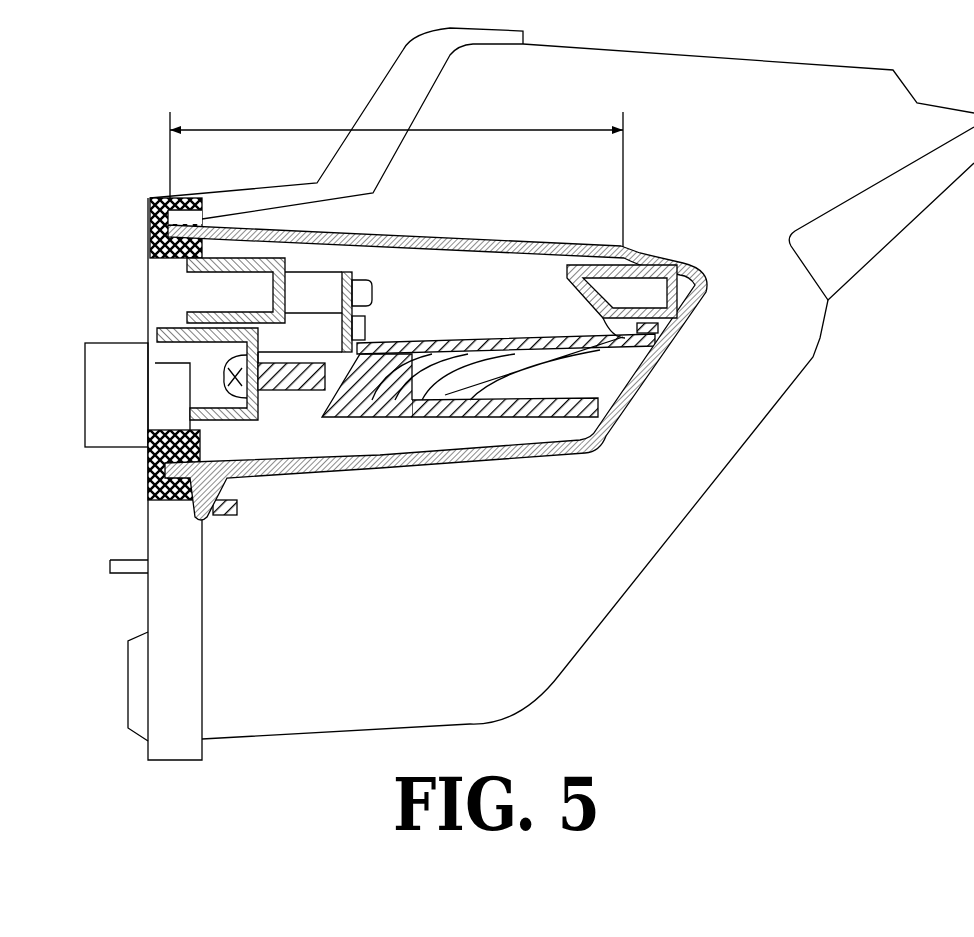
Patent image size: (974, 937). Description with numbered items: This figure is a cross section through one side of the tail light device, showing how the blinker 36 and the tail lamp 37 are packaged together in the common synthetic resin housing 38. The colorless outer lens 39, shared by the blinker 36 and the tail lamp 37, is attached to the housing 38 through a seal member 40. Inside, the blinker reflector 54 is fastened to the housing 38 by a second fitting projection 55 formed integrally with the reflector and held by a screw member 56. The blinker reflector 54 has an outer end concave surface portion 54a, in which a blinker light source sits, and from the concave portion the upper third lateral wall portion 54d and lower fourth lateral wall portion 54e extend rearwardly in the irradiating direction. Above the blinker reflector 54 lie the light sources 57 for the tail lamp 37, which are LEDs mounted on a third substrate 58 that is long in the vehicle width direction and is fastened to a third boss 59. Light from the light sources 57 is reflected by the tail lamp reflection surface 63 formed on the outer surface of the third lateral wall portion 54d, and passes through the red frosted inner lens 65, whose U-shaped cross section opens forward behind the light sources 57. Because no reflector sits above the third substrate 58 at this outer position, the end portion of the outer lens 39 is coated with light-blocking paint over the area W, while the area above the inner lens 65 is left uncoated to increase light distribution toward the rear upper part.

The blinker 36 is at (675, 358).
The tail lamp 37 is at (441, 344).
The housing 38 is at (187, 312).
The outer lens 39 is at (600, 437).
The seal member 40 is at (200, 218).
The blinker reflector 54 is at (490, 409).
The concave surface portion 54a is at (375, 365).
The third lateral wall portion 54d is at (514, 342).
The fourth lateral wall portion 54e is at (463, 420).
The second fitting projection 55 is at (290, 365).
The screw member 56 is at (232, 378).
The light source for the tail lamp 57 is at (362, 295).
The third substrate 58 is at (354, 275).
The third boss 59 is at (303, 333).
The tail lamp reflection surface 63 is at (535, 328).
The inner lens for the tail lamp 65 is at (672, 290).
The area coated with paint W is at (443, 130).